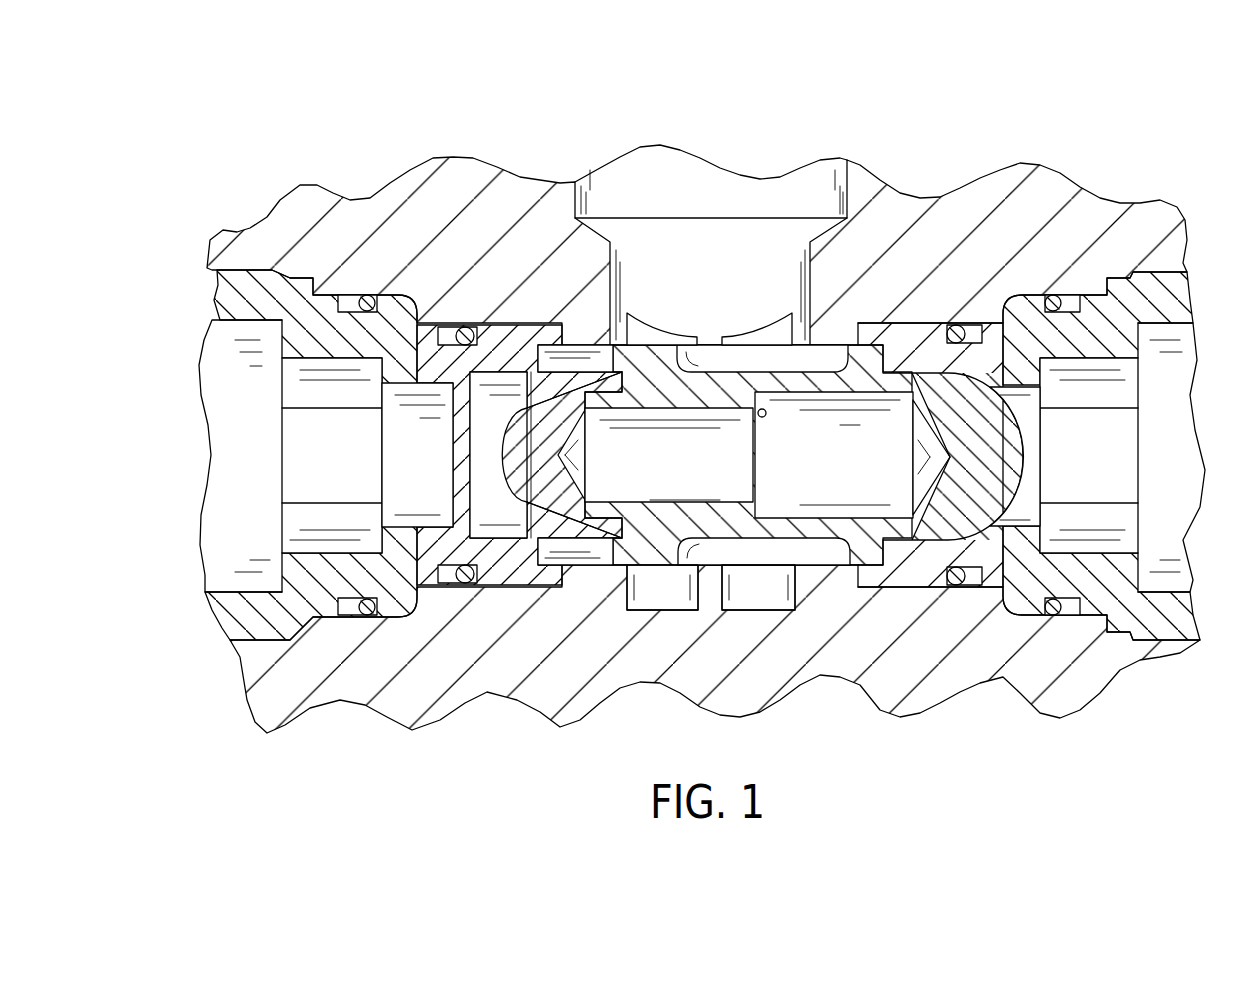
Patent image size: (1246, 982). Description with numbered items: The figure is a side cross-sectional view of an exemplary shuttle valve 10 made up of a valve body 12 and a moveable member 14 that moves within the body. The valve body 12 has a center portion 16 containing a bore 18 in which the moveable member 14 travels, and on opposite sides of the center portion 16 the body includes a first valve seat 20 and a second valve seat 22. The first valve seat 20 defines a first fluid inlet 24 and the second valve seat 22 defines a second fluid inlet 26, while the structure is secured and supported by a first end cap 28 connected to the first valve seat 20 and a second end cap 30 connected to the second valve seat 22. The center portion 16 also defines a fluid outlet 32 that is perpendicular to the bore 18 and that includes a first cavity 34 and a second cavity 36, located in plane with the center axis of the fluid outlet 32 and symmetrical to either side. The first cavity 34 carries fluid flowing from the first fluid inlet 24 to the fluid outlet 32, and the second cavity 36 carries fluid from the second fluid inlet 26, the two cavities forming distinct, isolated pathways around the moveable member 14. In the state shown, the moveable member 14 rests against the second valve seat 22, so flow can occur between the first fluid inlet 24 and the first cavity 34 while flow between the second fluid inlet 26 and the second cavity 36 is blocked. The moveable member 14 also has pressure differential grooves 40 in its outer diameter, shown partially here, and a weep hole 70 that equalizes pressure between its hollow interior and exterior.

The shuttle valve 10 is at (699, 411).
The valve body 12 is at (874, 236).
The moveable member 14 is at (585, 528).
The center portion 16 is at (764, 196).
The bore 18 is at (578, 360).
The first valve seat 20 is at (488, 512).
The second valve seat 22 is at (1020, 512).
The first fluid inlet 24 is at (470, 440).
The second fluid inlet 26 is at (1040, 473).
The first end cap 28 is at (258, 419).
The second end cap 30 is at (1175, 352).
The fluid outlet 32 is at (713, 263).
The first cavity 34 is at (640, 333).
The second cavity 36 is at (778, 330).
The pressure differential grooves 40 is at (820, 553).
The weep hole 70 is at (764, 417).